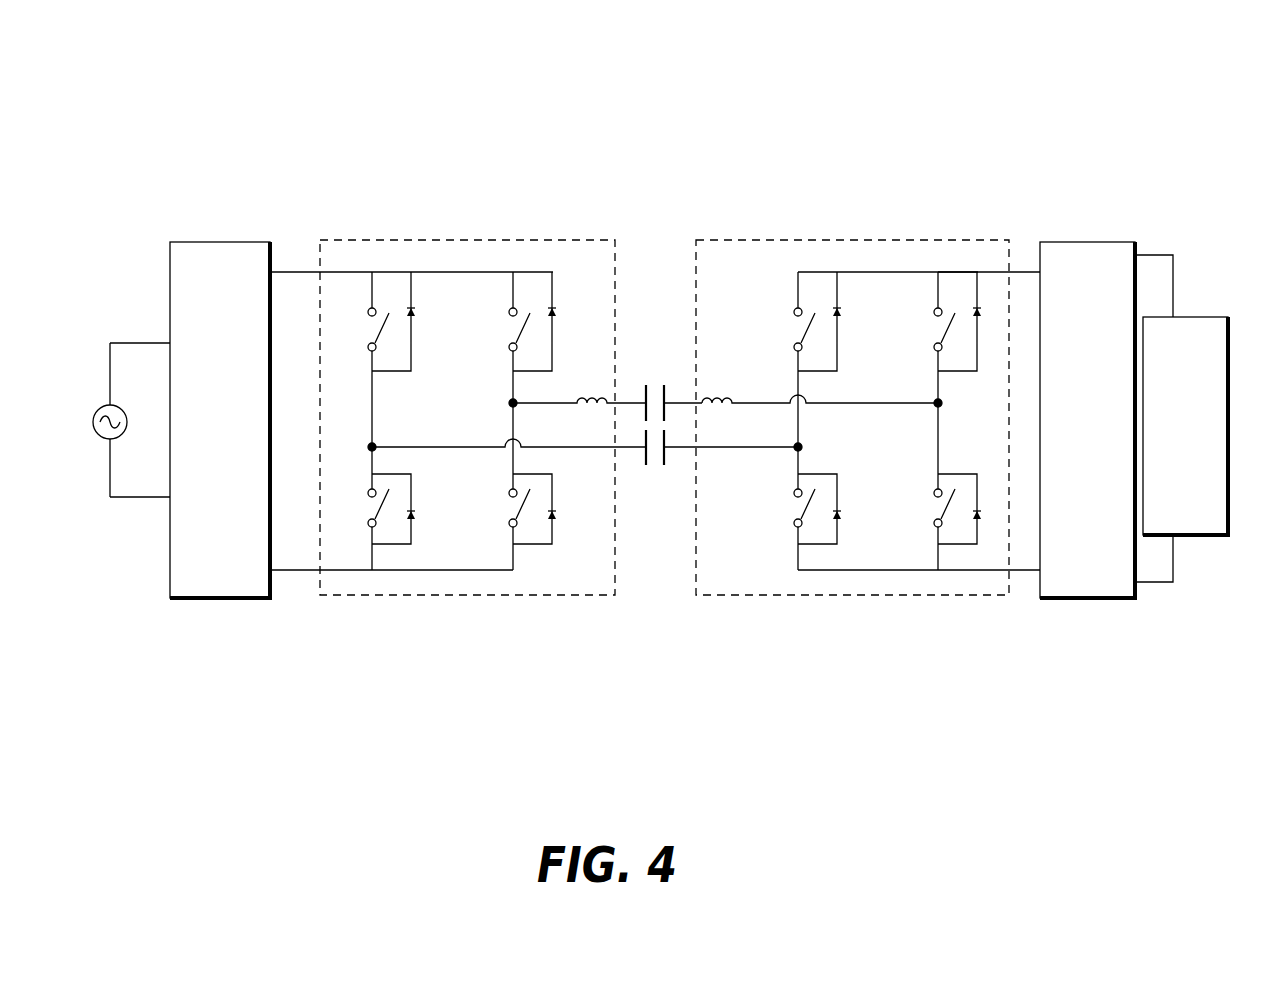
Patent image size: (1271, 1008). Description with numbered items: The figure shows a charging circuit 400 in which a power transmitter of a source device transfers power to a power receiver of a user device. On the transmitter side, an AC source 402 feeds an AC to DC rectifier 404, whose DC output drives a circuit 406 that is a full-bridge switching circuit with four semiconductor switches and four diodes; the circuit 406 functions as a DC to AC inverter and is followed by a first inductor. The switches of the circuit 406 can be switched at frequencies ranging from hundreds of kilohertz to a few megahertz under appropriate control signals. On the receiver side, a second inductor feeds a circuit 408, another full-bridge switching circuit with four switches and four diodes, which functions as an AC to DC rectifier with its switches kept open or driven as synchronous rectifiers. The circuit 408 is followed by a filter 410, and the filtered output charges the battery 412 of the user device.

The charging circuit 400 is at (1156, 101).
The AC source 402 is at (98, 408).
The AC to DC rectifier 404 is at (200, 242).
The circuit 406 is at (453, 240).
The circuit 408 is at (823, 240).
The filter 410 is at (1110, 242).
The battery 412 is at (1187, 317).